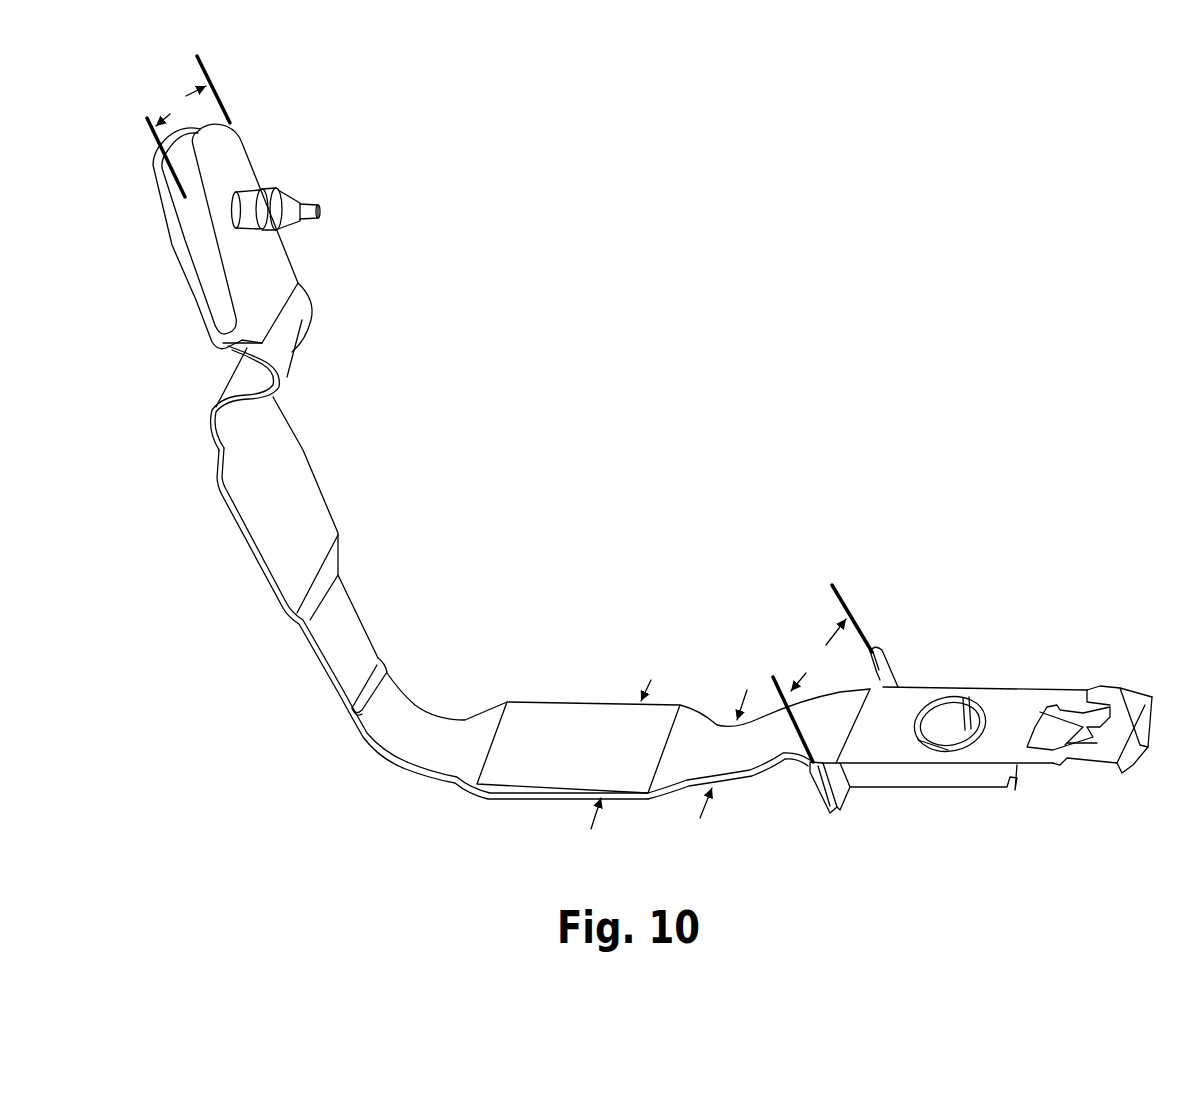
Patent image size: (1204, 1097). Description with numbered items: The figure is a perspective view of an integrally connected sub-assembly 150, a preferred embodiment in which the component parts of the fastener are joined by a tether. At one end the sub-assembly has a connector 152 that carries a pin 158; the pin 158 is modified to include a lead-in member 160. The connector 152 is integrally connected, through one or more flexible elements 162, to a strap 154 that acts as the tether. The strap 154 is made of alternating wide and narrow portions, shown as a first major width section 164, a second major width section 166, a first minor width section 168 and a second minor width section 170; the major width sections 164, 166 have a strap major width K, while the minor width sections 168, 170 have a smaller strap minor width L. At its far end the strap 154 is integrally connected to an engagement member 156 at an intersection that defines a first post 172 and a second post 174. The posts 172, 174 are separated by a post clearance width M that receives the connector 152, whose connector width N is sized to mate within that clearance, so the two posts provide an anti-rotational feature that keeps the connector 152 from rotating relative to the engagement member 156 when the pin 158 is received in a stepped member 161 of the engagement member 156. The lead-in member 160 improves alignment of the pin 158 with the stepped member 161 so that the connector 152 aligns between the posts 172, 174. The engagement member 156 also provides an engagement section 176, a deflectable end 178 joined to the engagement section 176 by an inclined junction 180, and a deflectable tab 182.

The integrally connected sub-assembly 150 is at (673, 466).
The connector 152 is at (273, 270).
The strap 154 is at (287, 471).
The engagement member 156 is at (1030, 702).
The pin 158 is at (282, 203).
The lead-in member 160 is at (322, 210).
The stepped member 161 is at (950, 731).
The flexible element 162 is at (290, 336).
The first major width section 164 is at (253, 477).
The second major width section 166 is at (557, 737).
The first minor width section 168 is at (405, 727).
The second minor width section 170 is at (729, 748).
The first post 172 is at (881, 650).
The second post 174 is at (837, 813).
The engagement section 176 is at (917, 700).
The deflectable end 178 is at (1130, 703).
The inclined junction 180 is at (1085, 690).
The deflectable tab 182 is at (1067, 723).